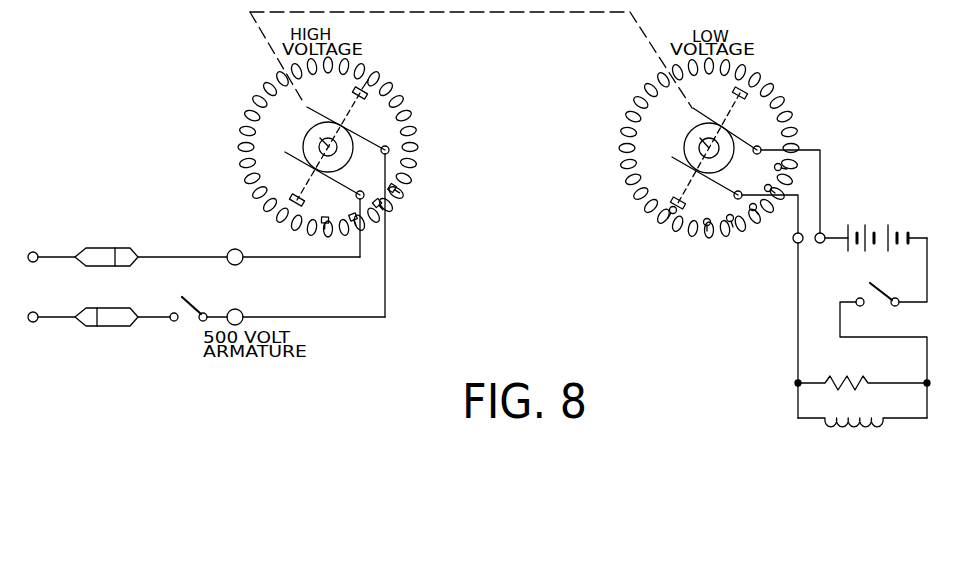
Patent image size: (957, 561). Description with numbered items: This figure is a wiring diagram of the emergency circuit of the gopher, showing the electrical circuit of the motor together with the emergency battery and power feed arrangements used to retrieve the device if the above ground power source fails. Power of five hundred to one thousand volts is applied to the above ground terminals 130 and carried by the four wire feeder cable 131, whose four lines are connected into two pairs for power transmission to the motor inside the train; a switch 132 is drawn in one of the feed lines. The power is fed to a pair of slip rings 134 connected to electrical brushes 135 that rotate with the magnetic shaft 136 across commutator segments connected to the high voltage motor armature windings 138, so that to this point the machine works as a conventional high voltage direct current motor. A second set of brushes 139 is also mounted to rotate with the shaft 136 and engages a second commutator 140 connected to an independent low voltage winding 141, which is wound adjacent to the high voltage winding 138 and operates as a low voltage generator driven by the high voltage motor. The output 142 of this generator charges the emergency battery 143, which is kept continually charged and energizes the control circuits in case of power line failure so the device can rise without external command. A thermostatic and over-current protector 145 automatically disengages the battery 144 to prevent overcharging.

The above ground terminals 130 is at (61, 257).
The four wire feeder cable 131 is at (115, 249).
The switch 132 is at (188, 308).
The slip rings 134 is at (310, 141).
The electrical brushes 135 is at (367, 83).
The magnetic shaft 136 is at (355, 137).
The high voltage motor armature windings 138 is at (244, 143).
The second set of brushes 139 is at (672, 198).
The second commutator 140 is at (726, 215).
The low voltage winding 141 is at (626, 132).
The output 142 is at (798, 209).
The emergency battery 143 is at (875, 220).
The battery 144 is at (798, 283).
The thermostatic and over-current protector 145 is at (816, 431).